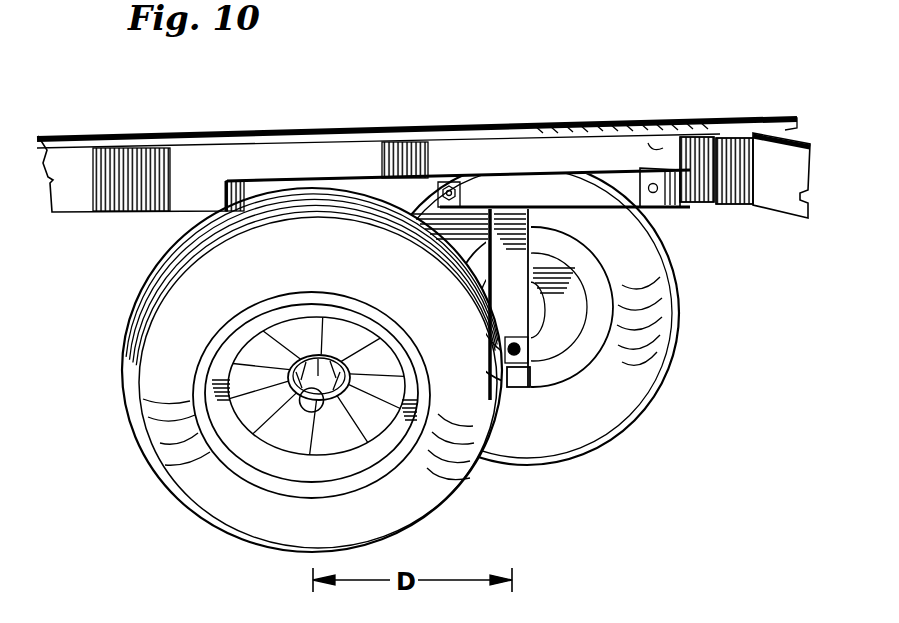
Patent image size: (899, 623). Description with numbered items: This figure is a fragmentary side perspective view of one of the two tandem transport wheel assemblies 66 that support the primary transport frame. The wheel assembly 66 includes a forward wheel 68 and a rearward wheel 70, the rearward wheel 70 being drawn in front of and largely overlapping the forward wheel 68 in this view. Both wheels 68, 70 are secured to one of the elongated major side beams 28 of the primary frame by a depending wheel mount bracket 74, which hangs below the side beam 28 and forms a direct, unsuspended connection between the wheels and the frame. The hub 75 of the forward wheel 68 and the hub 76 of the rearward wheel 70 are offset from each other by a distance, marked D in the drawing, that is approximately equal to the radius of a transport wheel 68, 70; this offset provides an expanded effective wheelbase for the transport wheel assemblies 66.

The side beam 28 is at (640, 134).
The transport wheel assembly 66 is at (617, 487).
The forward wheel 68 is at (610, 410).
The rearward wheel 70 is at (440, 508).
The wheel mount bracket 74 is at (513, 270).
The hub 75 is at (533, 350).
The hub 76 is at (311, 402).